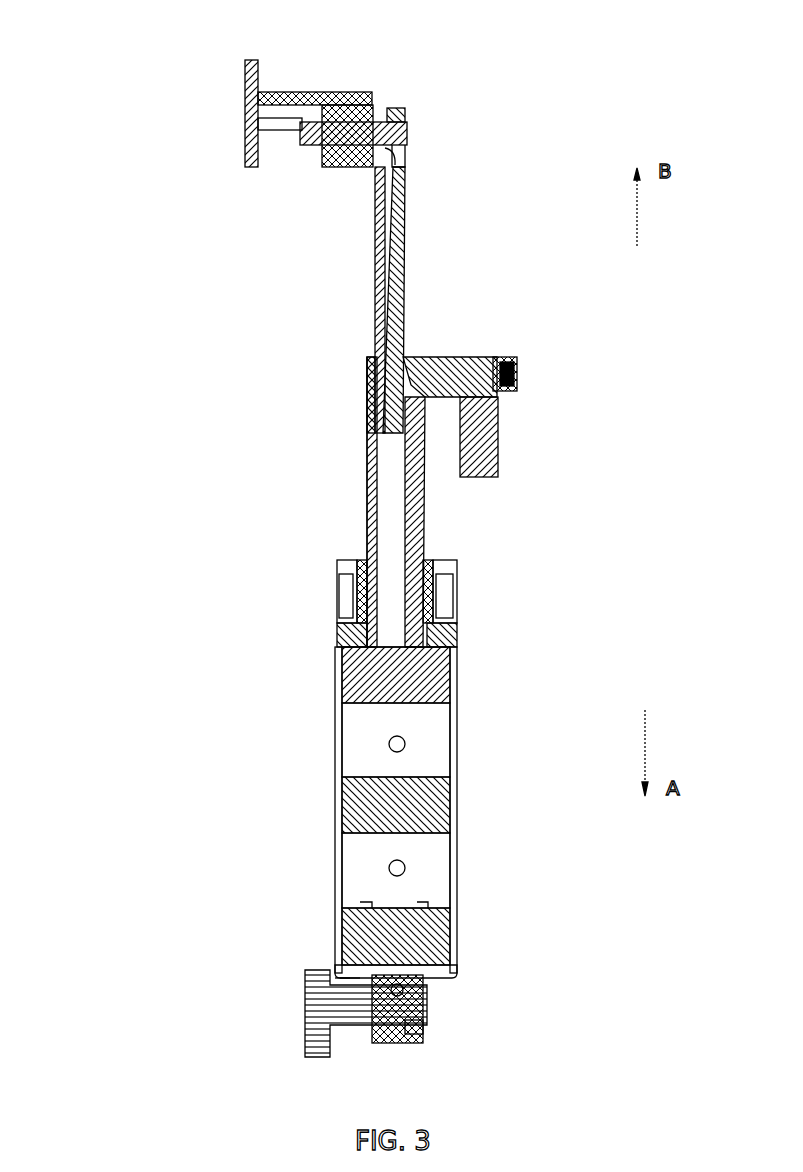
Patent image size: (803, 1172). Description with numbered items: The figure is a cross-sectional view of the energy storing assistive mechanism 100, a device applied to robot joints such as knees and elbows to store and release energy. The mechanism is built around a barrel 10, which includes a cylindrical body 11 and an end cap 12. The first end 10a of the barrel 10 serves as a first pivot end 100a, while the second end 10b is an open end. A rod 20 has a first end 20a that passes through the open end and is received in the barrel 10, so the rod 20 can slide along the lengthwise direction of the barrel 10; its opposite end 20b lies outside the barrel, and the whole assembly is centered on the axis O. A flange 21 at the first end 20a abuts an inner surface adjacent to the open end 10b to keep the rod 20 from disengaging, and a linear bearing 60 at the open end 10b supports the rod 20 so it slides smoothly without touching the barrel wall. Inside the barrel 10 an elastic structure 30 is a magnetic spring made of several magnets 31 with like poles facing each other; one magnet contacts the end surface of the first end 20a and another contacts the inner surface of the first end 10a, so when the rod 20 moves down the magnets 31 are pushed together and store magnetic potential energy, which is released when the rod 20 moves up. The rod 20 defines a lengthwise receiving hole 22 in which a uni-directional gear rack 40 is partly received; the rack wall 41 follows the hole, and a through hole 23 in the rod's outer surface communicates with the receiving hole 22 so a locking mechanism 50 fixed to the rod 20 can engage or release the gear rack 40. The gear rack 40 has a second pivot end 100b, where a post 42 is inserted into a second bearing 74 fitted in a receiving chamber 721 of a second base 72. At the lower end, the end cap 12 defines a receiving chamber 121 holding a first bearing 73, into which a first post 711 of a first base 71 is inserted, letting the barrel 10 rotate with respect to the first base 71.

The energy storing assistive mechanism 100 is at (135, 82).
The second base 72 is at (242, 119).
The second bearing 74 is at (349, 104).
The receiving chamber 721 is at (376, 106).
The second pivot end 100b is at (414, 118).
The post 42 is at (410, 134).
The uni-directional gear rack 40 is at (376, 256).
The outer shaft wall 41 is at (405, 258).
The through hole 23 is at (416, 357).
The locking mechanism 50 is at (504, 420).
The second end of inner shaft 20b is at (366, 356).
The axis O is at (356, 387).
The receiving hole 22 is at (384, 454).
The rod 20 is at (368, 492).
The second end of the barrel 10b is at (338, 585).
The linear bearing 60 is at (436, 604).
The first end of the rod 20a is at (358, 625).
The flange 21 is at (385, 648).
The magnets 31 is at (378, 797).
The cylindrical body 11 is at (440, 756).
The elastic structure 30 is at (356, 815).
The barrel 10 is at (462, 880).
The end cap 12 is at (432, 975).
The first end of the barrel 10a is at (335, 968).
The first pivot end 100a is at (258, 969).
The first base 71 is at (300, 1018).
The first bearing 73 is at (393, 1045).
The first post 711 is at (408, 1003).
The receiving chamber 121 is at (424, 1030).